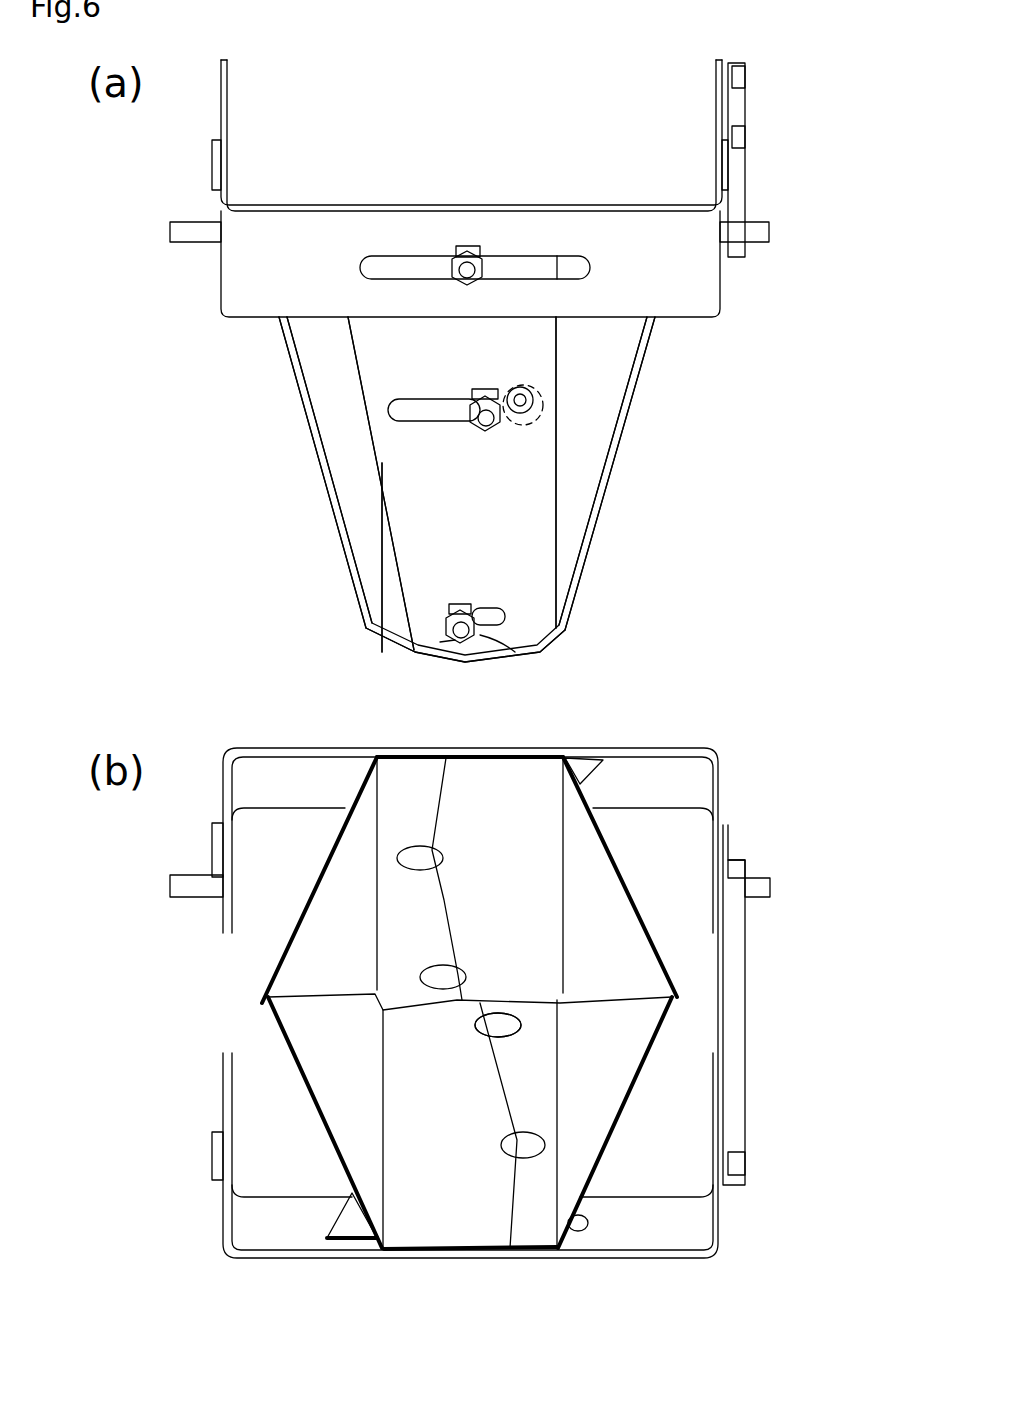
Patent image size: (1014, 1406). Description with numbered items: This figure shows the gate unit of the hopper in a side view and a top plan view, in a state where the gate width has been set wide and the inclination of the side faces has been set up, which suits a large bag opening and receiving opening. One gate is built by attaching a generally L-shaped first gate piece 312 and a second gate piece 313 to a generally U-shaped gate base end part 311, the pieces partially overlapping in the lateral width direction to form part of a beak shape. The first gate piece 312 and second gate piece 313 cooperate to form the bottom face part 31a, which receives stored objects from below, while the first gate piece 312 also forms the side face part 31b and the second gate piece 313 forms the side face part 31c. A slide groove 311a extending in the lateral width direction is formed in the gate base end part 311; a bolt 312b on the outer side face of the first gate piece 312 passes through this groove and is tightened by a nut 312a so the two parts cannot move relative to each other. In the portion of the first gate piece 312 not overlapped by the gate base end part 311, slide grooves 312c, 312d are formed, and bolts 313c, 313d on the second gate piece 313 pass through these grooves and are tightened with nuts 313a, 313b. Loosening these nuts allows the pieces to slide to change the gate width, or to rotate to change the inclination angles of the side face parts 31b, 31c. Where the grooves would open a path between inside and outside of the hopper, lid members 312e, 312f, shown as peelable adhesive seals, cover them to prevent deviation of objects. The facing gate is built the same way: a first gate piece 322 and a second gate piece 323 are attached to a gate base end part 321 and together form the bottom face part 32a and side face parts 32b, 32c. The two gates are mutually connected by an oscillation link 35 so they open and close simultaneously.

The bottom face part 31a is at (502, 507).
The side face part 31b is at (600, 398).
The side face part 31c is at (352, 455).
The gate base end part 311 is at (258, 322).
The slide groove 311a is at (592, 266).
The first gate piece 312 is at (607, 512).
The nut 312a is at (482, 250).
The bolt 312b is at (455, 262).
The slide groove 312c is at (456, 405).
The slide groove 312d is at (510, 588).
The lid member 312e is at (520, 425).
The lid member 312f is at (522, 1028).
The second gate piece 313 is at (350, 530).
The nut 313a is at (494, 392).
The nut 313b is at (500, 650).
The bolt 313c is at (472, 432).
The bolt 313d is at (458, 645).
The bottom face part 32a is at (477, 803).
The side face part 32b is at (312, 410).
The side face part 32c is at (650, 362).
The gate base end part 321 is at (317, 752).
The first gate piece 322 is at (348, 590).
The second gate piece 323 is at (618, 455).
The oscillation link 35 is at (747, 150).